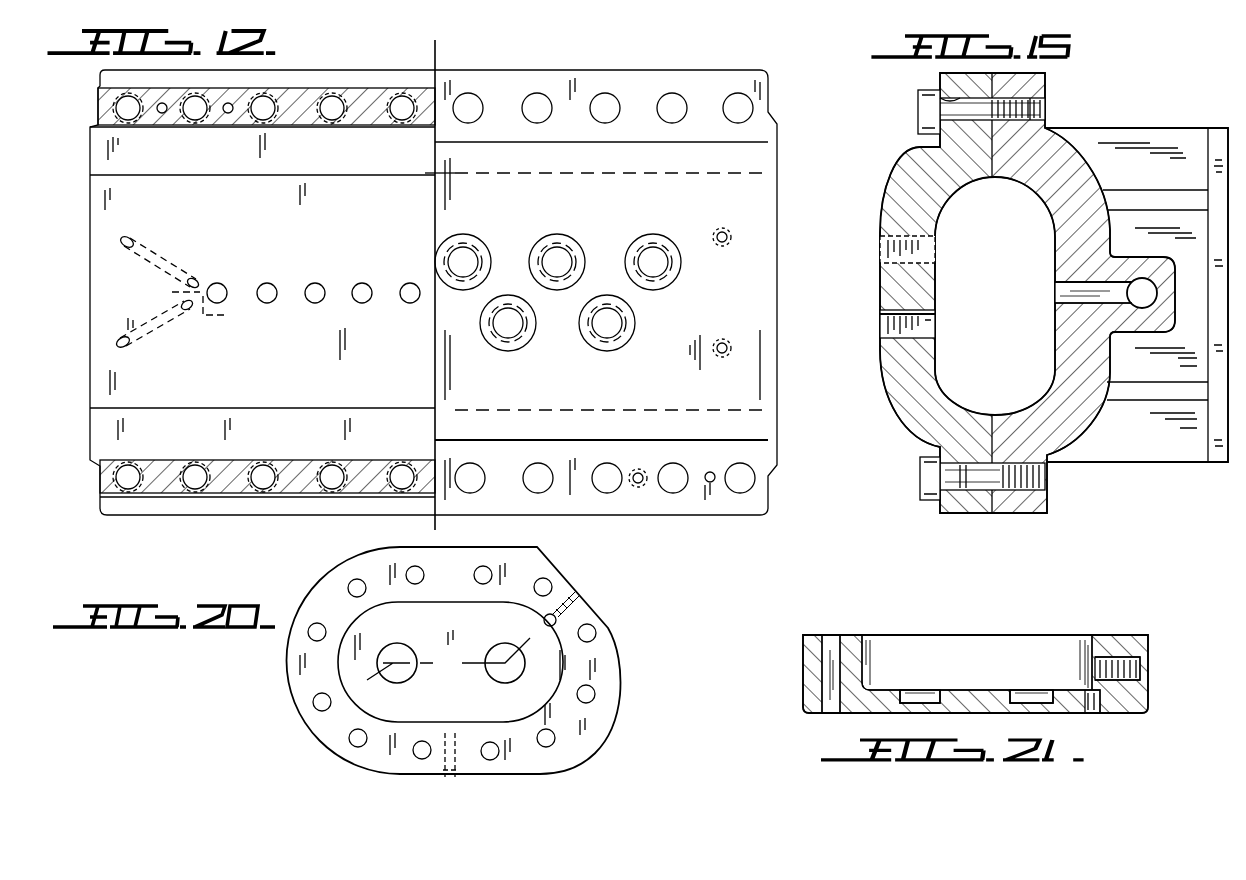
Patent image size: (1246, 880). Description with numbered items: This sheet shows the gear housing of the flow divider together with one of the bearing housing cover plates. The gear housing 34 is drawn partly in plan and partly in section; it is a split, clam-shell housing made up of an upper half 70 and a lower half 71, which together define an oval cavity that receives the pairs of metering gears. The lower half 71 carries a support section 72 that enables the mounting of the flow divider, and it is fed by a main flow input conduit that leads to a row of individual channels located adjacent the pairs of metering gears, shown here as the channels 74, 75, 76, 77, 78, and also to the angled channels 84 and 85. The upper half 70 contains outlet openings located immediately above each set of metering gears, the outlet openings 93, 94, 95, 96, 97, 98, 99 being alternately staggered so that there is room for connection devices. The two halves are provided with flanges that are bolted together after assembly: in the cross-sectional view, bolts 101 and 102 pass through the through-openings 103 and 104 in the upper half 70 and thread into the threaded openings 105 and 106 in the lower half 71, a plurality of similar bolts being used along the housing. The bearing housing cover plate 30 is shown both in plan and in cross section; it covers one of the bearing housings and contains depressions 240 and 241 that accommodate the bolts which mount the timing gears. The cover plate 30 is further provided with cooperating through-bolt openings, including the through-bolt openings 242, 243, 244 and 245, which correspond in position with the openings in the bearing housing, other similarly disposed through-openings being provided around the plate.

In FIG. 20, the bearing housing cover plate 30 is at (616, 608).
In FIG. 21, the bearing housing cover plate 30 is at (1131, 621).
In FIG. 12, the gear housing 34 is at (556, 66).
In FIG. 12, the upper half 70 is at (595, 208).
In FIG. 15, the upper half 70 is at (888, 396).
In FIG. 15, the lower half 71 is at (1087, 425).
In FIG. 15, the support section 72 is at (1220, 464).
In FIG. 12, the channel 74 is at (217, 284).
In FIG. 12, the channel 75 is at (267, 284).
In FIG. 12, the channel 76 is at (315, 284).
In FIG. 12, the channel 77 is at (362, 284).
In FIG. 12, the channel 78 is at (410, 284).
In FIG. 12, the channel 84 is at (160, 324).
In FIG. 12, the channel 85 is at (160, 260).
In FIG. 15, the outlet opening 93 is at (878, 250).
In FIG. 15, the outlet opening 94 is at (878, 322).
In FIG. 12, the outlet opening 95 is at (465, 258).
In FIG. 12, the outlet opening 96 is at (508, 335).
In FIG. 12, the outlet opening 97 is at (557, 255).
In FIG. 12, the outlet opening 98 is at (607, 335).
In FIG. 12, the outlet opening 99 is at (655, 258).
In FIG. 15, the bolt 101 is at (920, 482).
In FIG. 15, the bolt 102 is at (918, 112).
In FIG. 15, the through-opening 103 is at (972, 490).
In FIG. 12, the through-opening 104 is at (400, 112).
In FIG. 15, the through-opening 104 is at (930, 95).
In FIG. 15, the threaded opening 105 is at (1045, 486).
In FIG. 15, the threaded opening 106 is at (1040, 112).
In FIG. 20, the depression 240 is at (400, 674).
In FIG. 21, the depression 240 is at (925, 688).
In FIG. 20, the depression 241 is at (495, 676).
In FIG. 21, the depression 241 is at (1030, 688).
In FIG. 20, the through-bolt opening 242 is at (352, 584).
In FIG. 20, the through-bolt opening 243 is at (420, 570).
In FIG. 20, the through-bolt opening 244 is at (352, 744).
In FIG. 20, the through-bolt opening 245 is at (418, 756).